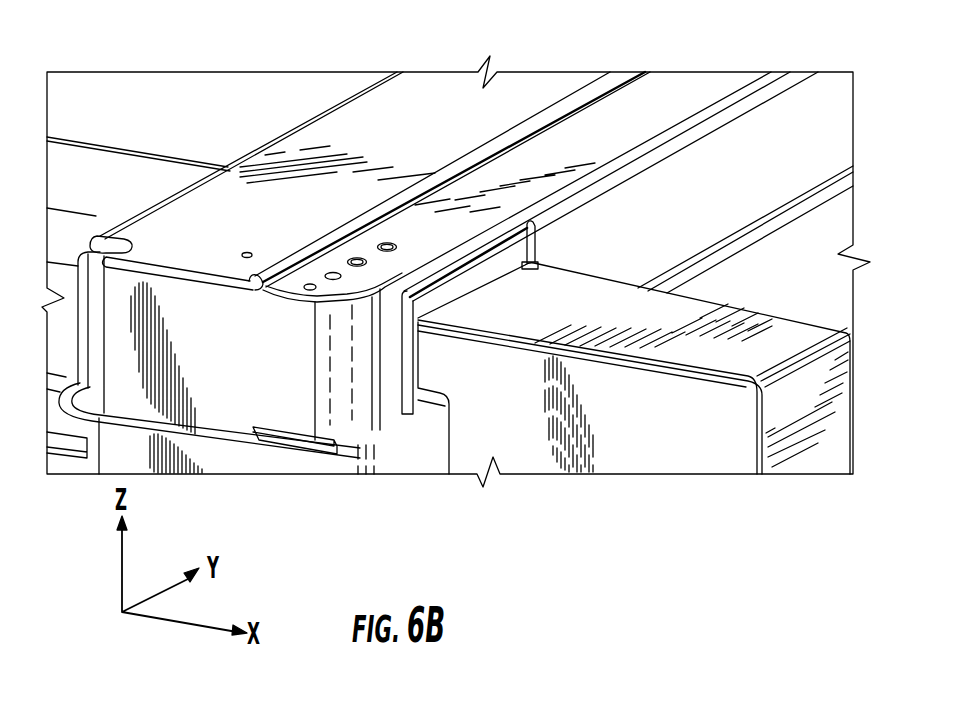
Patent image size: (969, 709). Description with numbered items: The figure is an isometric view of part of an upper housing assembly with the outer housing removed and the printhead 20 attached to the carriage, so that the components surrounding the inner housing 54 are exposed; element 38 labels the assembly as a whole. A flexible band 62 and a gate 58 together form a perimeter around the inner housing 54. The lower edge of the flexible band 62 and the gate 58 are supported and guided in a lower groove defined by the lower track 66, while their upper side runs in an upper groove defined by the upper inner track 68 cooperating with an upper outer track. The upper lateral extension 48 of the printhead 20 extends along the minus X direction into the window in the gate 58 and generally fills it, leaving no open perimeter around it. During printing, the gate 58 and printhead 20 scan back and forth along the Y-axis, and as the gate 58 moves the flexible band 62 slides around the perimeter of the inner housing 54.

The battery pack 38 is at (229, 107).
The inner housing 54 is at (118, 249).
The gate 58 is at (495, 272).
The upper inner track 68 is at (683, 100).
The lower track 66 is at (830, 192).
The upper lateral extension 48 is at (442, 360).
The printhead 20 is at (748, 338).
The flexible band 62 is at (225, 400).